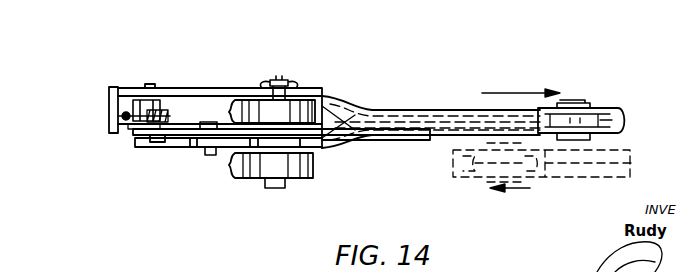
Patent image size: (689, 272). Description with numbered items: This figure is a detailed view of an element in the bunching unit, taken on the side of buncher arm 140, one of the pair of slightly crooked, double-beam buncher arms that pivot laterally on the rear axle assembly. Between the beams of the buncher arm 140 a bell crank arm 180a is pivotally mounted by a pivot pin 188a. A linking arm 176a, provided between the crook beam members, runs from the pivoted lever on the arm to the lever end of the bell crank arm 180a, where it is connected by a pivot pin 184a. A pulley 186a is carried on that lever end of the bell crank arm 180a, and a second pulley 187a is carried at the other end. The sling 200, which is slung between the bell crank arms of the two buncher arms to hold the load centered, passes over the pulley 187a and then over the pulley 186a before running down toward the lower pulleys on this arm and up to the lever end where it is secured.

The buncher arm 140 is at (318, 163).
The linking arm 176a is at (163, 137).
The bell crank arm 180a is at (428, 108).
The pivot pin 184a is at (203, 150).
The pulley 186a is at (140, 128).
The pulley 187a is at (596, 105).
The pivot pin 188a is at (276, 78).
The sling 200 is at (122, 116).